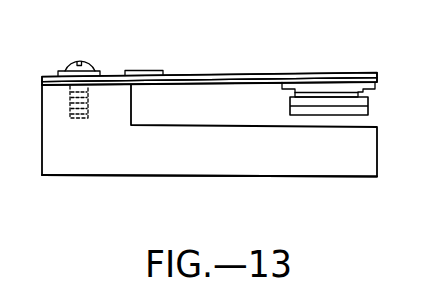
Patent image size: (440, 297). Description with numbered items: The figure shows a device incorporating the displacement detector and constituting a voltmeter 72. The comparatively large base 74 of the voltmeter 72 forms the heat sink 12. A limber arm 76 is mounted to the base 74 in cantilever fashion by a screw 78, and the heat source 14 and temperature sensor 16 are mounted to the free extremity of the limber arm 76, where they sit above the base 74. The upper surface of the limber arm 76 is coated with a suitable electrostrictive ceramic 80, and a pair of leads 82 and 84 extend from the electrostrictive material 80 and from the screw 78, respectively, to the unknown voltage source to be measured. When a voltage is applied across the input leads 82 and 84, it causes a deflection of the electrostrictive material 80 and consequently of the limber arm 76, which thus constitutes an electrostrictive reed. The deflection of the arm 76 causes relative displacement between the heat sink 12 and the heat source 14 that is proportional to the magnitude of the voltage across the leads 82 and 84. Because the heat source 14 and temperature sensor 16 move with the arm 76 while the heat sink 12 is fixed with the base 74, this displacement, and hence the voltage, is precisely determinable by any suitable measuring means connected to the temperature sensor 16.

The heat sink 12 is at (366, 127).
The heat source 14 is at (368, 110).
The temperature sensor 16 is at (367, 104).
The voltmeter 72 is at (251, 69).
The base 74 is at (183, 177).
The limber arm 76 is at (155, 80).
The screw 78 is at (74, 69).
The electrostrictive ceramic 80 is at (217, 73).
The lead 82 is at (125, 72).
The lead 84 is at (56, 72).